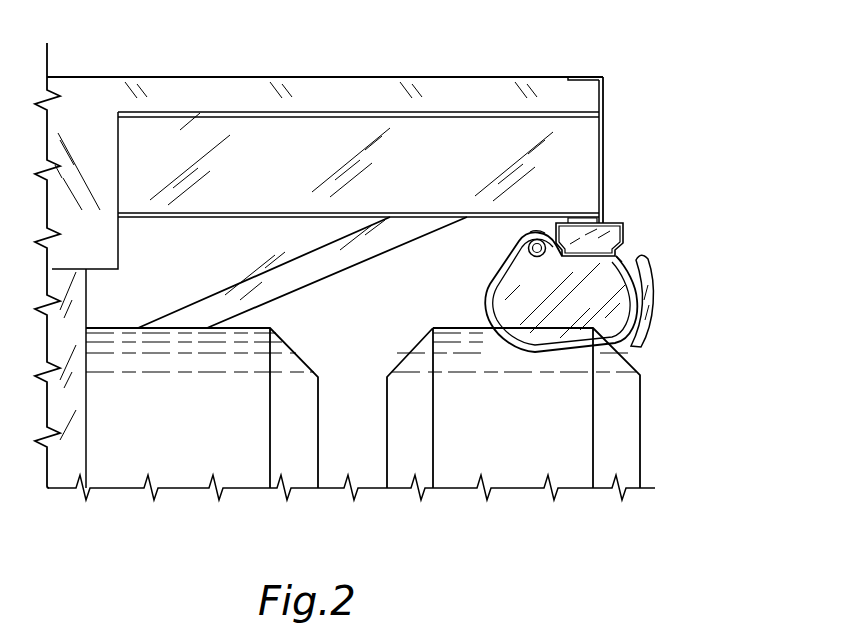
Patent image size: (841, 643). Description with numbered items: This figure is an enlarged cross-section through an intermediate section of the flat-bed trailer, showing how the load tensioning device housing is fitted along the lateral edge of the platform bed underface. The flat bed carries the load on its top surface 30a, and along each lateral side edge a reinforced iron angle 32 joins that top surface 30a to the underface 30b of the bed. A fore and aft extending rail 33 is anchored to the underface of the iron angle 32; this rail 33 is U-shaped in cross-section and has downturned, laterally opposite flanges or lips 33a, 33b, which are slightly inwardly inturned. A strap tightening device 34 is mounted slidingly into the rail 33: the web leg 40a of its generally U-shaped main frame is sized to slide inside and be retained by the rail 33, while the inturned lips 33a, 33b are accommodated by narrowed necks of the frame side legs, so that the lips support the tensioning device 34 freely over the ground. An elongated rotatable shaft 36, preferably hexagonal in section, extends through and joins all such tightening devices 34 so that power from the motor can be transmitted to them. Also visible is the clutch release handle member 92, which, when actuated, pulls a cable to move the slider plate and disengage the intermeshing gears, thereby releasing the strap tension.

The top surface 30a is at (229, 77).
The underface 30b is at (305, 227).
The reinforced iron angle 32 is at (600, 152).
The rail 33 is at (617, 215).
The lip 33a is at (537, 250).
The lip 33b is at (620, 250).
The strap tightening device 34 is at (577, 283).
The rotatable shaft 36 is at (535, 232).
The web leg 40a is at (623, 237).
The clutch release handle member 92 is at (674, 301).